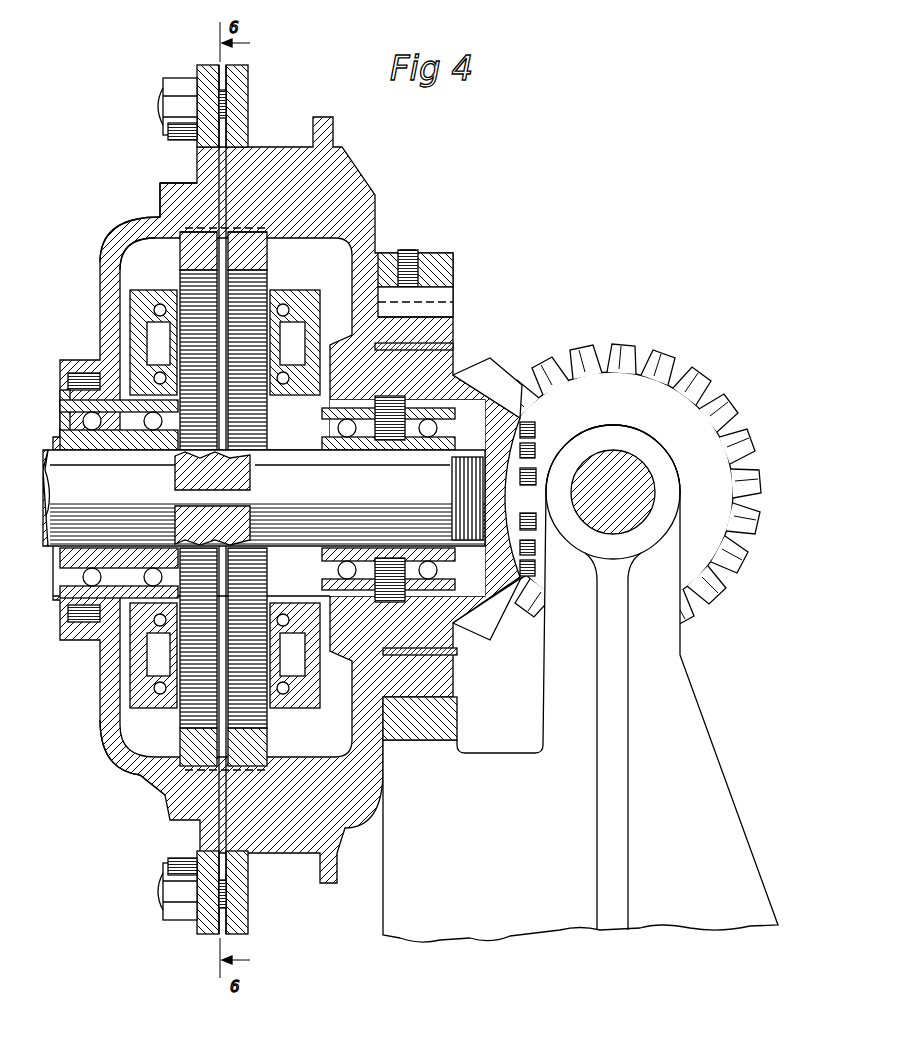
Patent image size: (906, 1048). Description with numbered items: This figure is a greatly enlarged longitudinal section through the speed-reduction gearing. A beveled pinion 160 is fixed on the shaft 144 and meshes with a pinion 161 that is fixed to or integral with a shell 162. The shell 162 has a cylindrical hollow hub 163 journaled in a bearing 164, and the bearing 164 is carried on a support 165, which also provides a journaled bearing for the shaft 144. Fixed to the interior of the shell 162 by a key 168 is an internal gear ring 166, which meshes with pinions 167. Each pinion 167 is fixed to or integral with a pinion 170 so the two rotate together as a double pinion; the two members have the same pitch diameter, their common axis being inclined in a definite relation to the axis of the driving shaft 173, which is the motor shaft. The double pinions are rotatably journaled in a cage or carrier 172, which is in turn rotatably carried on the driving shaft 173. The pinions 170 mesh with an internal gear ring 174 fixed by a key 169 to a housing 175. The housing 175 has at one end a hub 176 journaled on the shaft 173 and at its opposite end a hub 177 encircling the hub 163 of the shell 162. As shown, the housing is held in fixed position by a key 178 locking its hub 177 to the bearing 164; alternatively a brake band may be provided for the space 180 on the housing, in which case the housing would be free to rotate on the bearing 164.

The shaft 144 is at (632, 492).
The beveled pinion 160 is at (612, 366).
The pinion 161 is at (500, 383).
The shell 162 is at (345, 237).
The cylindrical hollow hub 163 is at (427, 363).
The bearing 164 is at (440, 265).
The support 165 is at (662, 722).
The internal gear ring 166 is at (290, 245).
The pinion 167 is at (262, 290).
The key 168 is at (267, 795).
The key 169 is at (205, 780).
The pinion 170 is at (192, 292).
The cage or carrier 172 is at (137, 338).
The driving shaft 173 is at (55, 477).
The internal gear ring 174 is at (207, 243).
The housing 175 is at (123, 231).
The hub 176 is at (86, 333).
The hub 177 is at (420, 330).
The key 178 is at (440, 295).
The space 180 is at (278, 140).